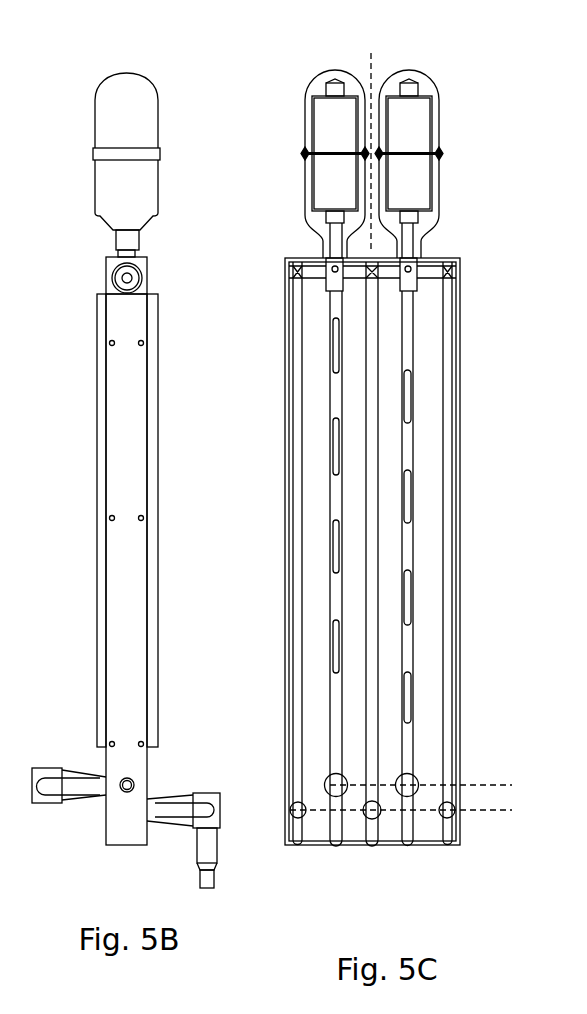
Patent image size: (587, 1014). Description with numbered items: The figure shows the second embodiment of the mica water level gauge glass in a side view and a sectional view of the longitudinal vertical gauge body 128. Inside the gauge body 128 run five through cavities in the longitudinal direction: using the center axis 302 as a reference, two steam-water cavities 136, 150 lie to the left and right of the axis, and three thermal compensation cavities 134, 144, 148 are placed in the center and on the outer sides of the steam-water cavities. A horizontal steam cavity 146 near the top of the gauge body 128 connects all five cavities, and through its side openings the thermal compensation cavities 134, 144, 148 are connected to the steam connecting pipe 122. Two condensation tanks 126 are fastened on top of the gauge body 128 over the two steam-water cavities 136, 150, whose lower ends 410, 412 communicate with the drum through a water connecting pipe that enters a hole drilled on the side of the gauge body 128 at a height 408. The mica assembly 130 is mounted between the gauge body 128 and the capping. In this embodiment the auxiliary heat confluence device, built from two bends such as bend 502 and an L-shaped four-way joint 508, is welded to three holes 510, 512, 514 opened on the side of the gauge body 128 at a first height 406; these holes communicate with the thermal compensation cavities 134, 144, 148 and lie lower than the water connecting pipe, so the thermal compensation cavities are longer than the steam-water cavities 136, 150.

In FIG. 5B, the steam connecting pipe 122 is at (133, 273).
In FIG. 5B, the condensation tank 126 is at (133, 112).
In FIG. 5C, the condensation tank 126 is at (424, 90).
In FIG. 5B, the gauge body 128 is at (135, 595).
In FIG. 5C, the gauge body 128 is at (425, 348).
In FIG. 5C, the mica assembly 130 is at (407, 395).
In FIG. 5C, the thermal compensation cavity 134 is at (372, 463).
In FIG. 5C, the steam-water cavity 136 is at (338, 397).
In FIG. 5C, the thermal compensation cavity 144 is at (300, 448).
In FIG. 5C, the horizontal steam cavity 146 is at (421, 280).
In FIG. 5C, the thermal compensation cavity 148 is at (443, 483).
In FIG. 5C, the steam-water cavity 150 is at (407, 532).
In FIG. 5C, the center axis 302 is at (376, 52).
In FIG. 5C, the first height 406 is at (497, 810).
In FIG. 5C, the height 408 is at (497, 785).
In FIG. 5C, the lower end of steam-water cavity 410 is at (330, 780).
In FIG. 5C, the lower end of steam-water cavity 412 is at (420, 775).
In FIG. 5B, the bend 502 is at (167, 808).
In FIG. 5B, the L-shaped four-way joint 508 is at (216, 866).
In FIG. 5C, the hole 510 is at (294, 816).
In FIG. 5C, the hole 512 is at (366, 814).
In FIG. 5C, the hole 514 is at (452, 814).